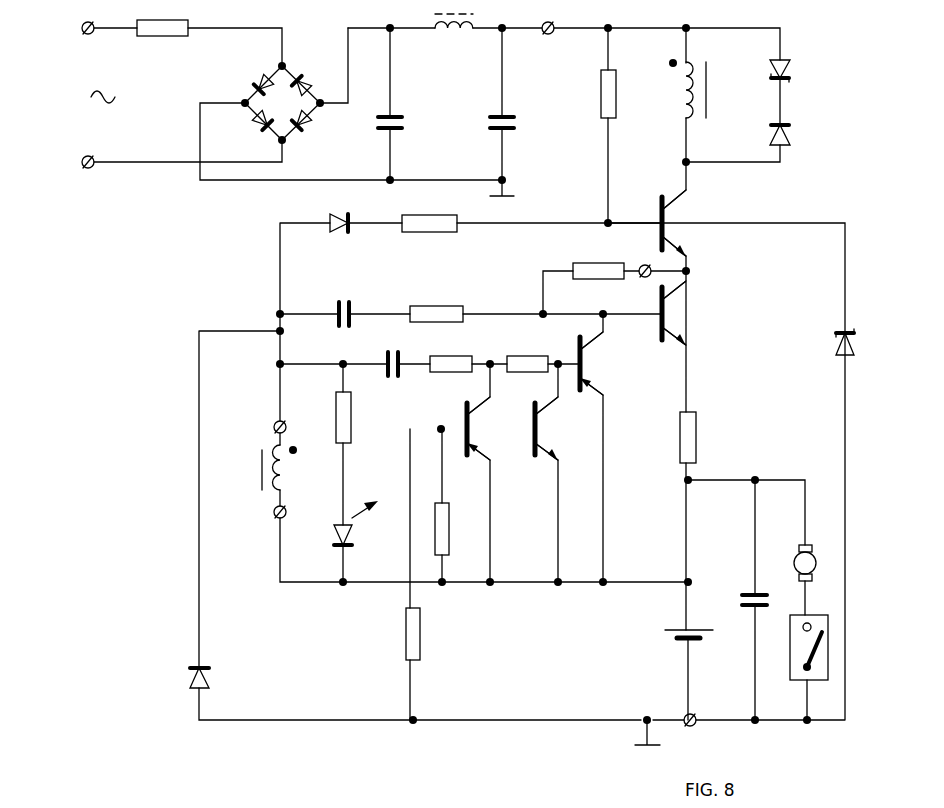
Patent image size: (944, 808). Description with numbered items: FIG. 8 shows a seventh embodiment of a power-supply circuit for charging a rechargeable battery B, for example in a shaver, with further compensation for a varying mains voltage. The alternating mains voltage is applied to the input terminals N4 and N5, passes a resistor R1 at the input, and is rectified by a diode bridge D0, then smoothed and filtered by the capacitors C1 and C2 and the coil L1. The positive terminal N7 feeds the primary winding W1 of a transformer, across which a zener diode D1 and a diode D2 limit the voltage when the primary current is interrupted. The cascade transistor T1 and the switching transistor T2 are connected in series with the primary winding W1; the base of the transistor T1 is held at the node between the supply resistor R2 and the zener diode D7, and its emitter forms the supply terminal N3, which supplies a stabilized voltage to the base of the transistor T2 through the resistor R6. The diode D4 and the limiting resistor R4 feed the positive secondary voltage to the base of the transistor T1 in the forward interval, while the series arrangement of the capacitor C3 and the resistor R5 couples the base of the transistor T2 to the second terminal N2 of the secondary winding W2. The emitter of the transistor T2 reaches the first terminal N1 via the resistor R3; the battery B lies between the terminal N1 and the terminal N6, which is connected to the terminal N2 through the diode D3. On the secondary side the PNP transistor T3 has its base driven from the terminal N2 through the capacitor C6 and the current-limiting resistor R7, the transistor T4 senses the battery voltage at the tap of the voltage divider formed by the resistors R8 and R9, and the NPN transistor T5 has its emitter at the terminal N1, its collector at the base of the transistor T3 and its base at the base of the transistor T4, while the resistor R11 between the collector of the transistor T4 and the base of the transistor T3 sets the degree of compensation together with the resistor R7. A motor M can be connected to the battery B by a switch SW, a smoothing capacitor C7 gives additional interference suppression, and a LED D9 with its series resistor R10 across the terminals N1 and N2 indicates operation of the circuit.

The input terminal N4 is at (85, 42).
The input terminal N5 is at (85, 175).
The resistor R1 is at (162, 42).
The diode bridge D0 is at (282, 103).
The capacitor C1 is at (403, 124).
The capacitor C2 is at (515, 124).
The coil L1 is at (454, 35).
The positive terminal N7 is at (554, 41).
The supply resistor R2 is at (622, 94).
The primary winding W1 is at (713, 90).
The zener diode D1 is at (797, 71).
The diode D2 is at (797, 134).
The cascade transistor T1 is at (686, 223).
The switching transistor T2 is at (686, 313).
The supply terminal N3 is at (639, 261).
The resistor R6 is at (598, 283).
The diode D4 is at (324, 217).
The limiting resistor R4 is at (429, 235).
The capacitor C3 is at (344, 301).
The resistor R5 is at (436, 303).
The capacitor C6 is at (393, 352).
The current-limiting resistor R7 is at (451, 376).
The resistor R11 is at (527, 353).
The transistor T3 is at (603, 363).
The transistor T4 is at (491, 428).
The transistor T5 is at (556, 429).
The resistor R8 is at (456, 529).
The resistor R9 is at (427, 634).
The series resistor R10 is at (362, 417).
The LED D9 is at (358, 526).
The second terminal N2 is at (265, 422).
The first terminal N1 is at (265, 516).
The secondary winding W2 is at (293, 467).
The diode D3 is at (183, 681).
The zener diode D7 is at (827, 345).
The resistor R3 is at (702, 437).
The rechargeable battery B is at (679, 636).
The terminal N6 is at (704, 711).
The smoothing capacitor C7 is at (742, 600).
The motor M is at (813, 563).
The switch SW is at (797, 647).